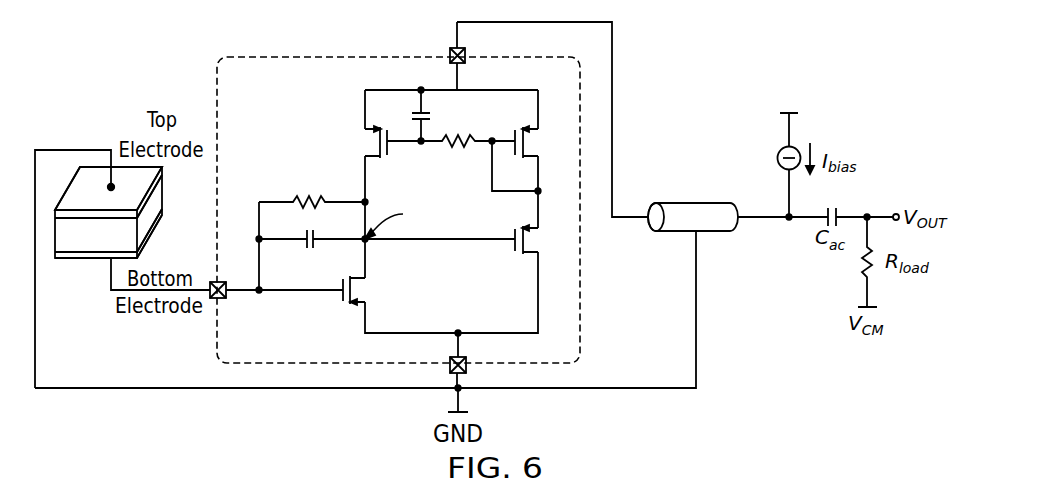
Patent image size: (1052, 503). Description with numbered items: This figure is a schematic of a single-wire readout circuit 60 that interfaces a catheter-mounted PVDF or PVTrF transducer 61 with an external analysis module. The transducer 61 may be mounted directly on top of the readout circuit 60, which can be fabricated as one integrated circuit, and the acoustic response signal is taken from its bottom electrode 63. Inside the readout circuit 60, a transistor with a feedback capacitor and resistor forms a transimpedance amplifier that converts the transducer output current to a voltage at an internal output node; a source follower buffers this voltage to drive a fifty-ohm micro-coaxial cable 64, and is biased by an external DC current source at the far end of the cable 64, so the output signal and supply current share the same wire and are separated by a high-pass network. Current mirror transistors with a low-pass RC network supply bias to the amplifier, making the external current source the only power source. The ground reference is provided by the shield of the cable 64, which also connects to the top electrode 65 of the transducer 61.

The readout circuit 60 is at (248, 54).
The PVDF or PVTrF transducer 61 is at (165, 198).
The bottom electrode 63 is at (83, 257).
The coaxial cable 64 is at (717, 233).
The top electrode 65 is at (97, 187).